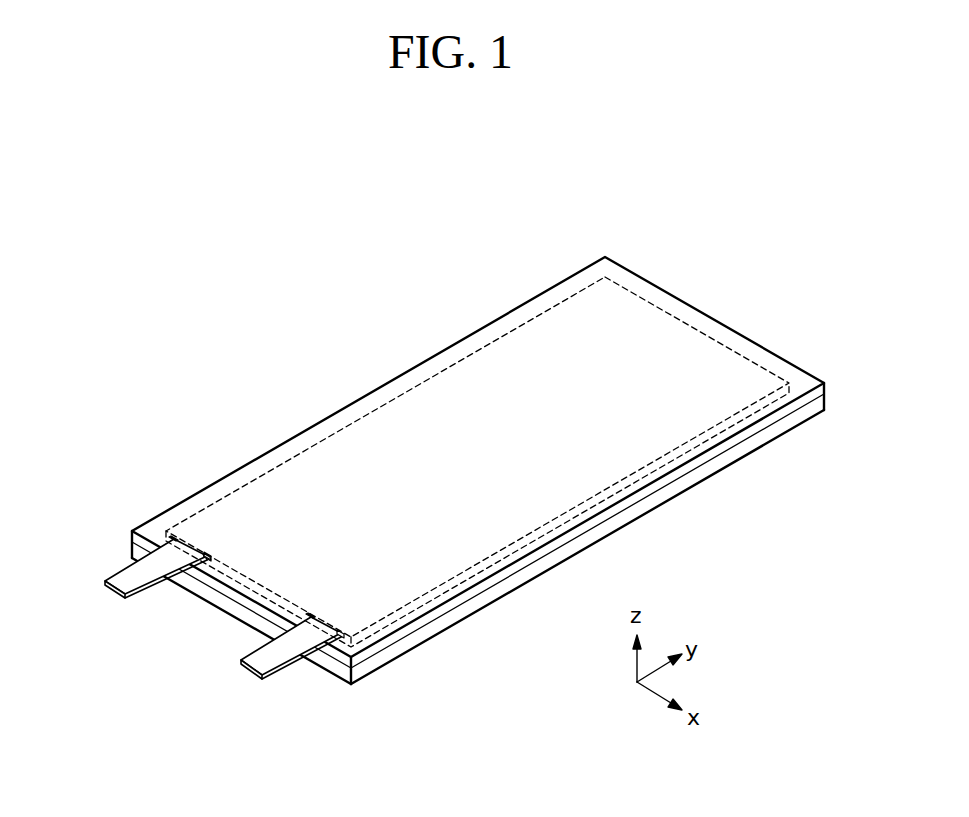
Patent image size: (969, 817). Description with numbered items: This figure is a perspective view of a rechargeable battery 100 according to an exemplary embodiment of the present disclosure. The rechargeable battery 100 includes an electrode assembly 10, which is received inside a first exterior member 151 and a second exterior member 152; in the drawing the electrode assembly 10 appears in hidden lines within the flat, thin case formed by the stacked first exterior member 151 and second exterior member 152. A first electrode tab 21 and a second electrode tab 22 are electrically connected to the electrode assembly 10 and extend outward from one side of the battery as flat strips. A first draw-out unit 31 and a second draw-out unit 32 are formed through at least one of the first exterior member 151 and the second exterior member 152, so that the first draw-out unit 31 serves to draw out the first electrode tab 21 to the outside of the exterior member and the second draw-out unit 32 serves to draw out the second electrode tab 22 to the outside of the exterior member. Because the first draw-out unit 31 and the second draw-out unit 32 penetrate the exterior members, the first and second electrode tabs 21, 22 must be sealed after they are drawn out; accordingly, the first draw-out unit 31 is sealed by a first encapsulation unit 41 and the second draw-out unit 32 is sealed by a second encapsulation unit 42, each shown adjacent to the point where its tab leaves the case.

The rechargeable battery 100 is at (393, 250).
The electrode assembly 10 is at (666, 307).
The first exterior member 151 is at (793, 370).
The second exterior member 152 is at (794, 424).
The first electrode tab 21 is at (121, 586).
The second electrode tab 22 is at (254, 667).
The first draw-out unit 31 is at (207, 552).
The second draw-out unit 32 is at (342, 632).
The first encapsulation unit 41 is at (174, 536).
The second encapsulation unit 42 is at (308, 616).